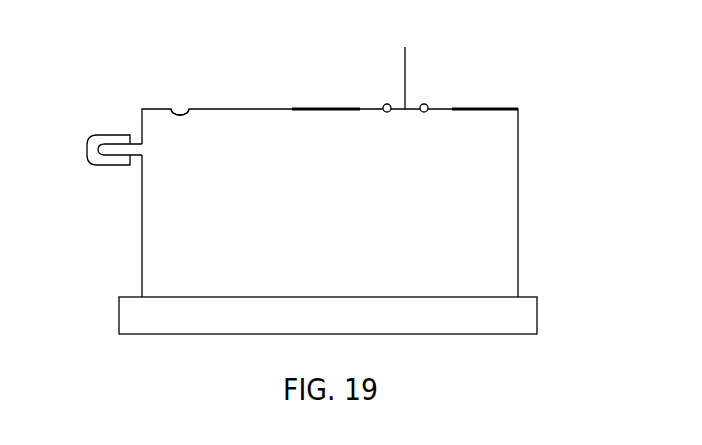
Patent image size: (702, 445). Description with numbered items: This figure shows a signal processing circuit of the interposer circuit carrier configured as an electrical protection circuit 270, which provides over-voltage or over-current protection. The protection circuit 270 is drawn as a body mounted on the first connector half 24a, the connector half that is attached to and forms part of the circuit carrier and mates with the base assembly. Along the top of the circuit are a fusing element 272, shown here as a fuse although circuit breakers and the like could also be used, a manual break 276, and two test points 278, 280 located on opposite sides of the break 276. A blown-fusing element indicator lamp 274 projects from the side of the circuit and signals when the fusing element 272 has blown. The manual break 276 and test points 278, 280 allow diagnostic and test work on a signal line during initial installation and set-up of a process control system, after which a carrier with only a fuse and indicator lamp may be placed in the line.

The electrical protection circuit 270 is at (518, 222).
The fusing element 272 is at (171, 107).
The blown-fusing element indicator lamp 274 is at (113, 165).
The manual break 276 is at (405, 77).
The test point 278 is at (322, 108).
The test point 280 is at (498, 108).
The first connector half 24a is at (119, 312).